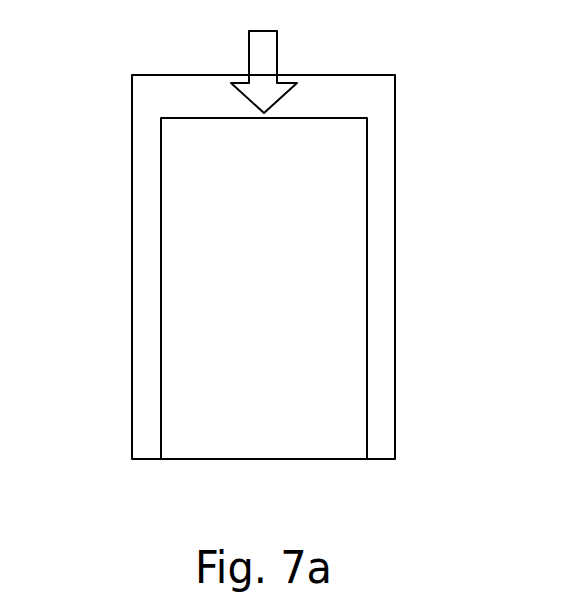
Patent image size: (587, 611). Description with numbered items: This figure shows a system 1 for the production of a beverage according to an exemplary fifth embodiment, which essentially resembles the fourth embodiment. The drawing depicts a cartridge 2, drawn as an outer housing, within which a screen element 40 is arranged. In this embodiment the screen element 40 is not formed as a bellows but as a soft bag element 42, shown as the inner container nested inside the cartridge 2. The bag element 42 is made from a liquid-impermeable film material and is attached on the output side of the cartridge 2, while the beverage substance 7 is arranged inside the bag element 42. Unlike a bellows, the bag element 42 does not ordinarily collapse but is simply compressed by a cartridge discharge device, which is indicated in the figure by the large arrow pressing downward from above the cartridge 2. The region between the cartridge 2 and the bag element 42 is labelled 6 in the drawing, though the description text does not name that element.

The system 1 is at (287, 267).
The cartridge 2 is at (396, 112).
The gap 6 is at (320, 110).
The beverage substance 7 is at (293, 422).
The screen element 40 is at (341, 288).
The bag element 42 is at (366, 212).